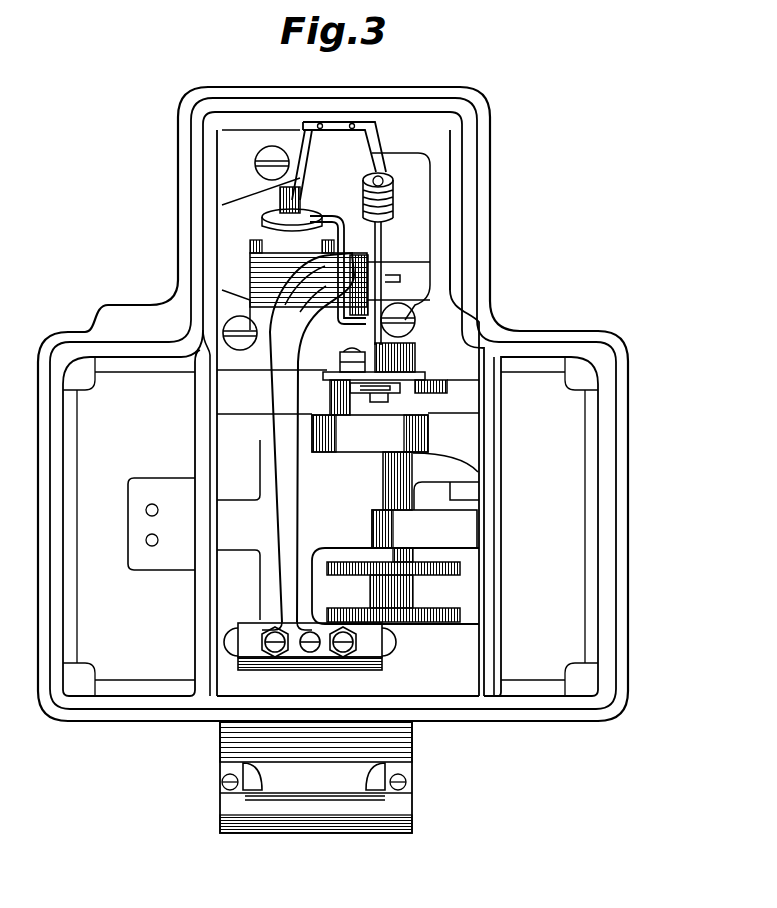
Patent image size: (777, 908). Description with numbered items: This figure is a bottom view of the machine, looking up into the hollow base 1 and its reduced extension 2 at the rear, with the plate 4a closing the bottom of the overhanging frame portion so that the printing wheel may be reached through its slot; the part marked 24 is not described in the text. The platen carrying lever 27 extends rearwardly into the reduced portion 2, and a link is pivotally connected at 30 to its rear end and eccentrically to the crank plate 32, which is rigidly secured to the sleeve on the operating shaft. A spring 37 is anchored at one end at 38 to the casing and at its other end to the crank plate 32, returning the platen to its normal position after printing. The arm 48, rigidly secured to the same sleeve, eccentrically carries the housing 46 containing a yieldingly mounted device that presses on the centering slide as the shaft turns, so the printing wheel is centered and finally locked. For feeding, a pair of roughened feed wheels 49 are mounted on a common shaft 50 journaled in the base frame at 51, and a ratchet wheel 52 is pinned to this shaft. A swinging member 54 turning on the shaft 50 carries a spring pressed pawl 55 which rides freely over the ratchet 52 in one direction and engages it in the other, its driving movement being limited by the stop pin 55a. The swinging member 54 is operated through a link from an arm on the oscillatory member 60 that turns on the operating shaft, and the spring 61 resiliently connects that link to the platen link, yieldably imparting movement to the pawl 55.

The hollow base 1 is at (610, 566).
The reduced extension 2 is at (480, 278).
The plate 4a is at (410, 746).
The terminal block 24 is at (357, 813).
The lever 27 is at (270, 458).
The pivotal connection 30 is at (356, 258).
The crank plate 32 is at (380, 256).
The spring 37 is at (392, 203).
The anchor 38 is at (374, 168).
The housing 46 is at (296, 200).
The arm 48 is at (322, 217).
The feed wheels 49 is at (446, 565).
The shaft 50 is at (400, 492).
The journal 51 is at (425, 496).
The ratchet wheel 52 is at (444, 380).
The swinging member 54 is at (413, 368).
The pawl 55 is at (360, 397).
The stop pin 55a is at (335, 400).
The oscillatory member 60 is at (283, 268).
The spring 61 is at (351, 350).